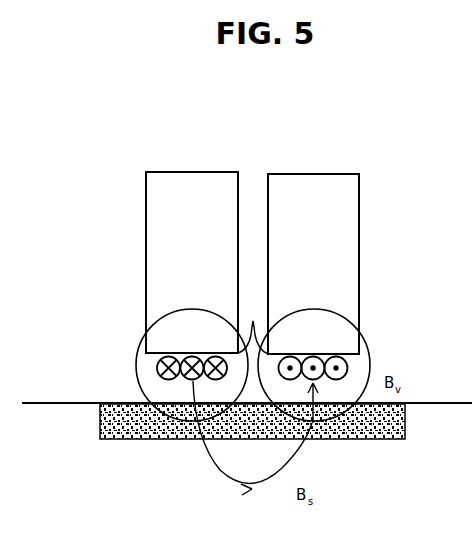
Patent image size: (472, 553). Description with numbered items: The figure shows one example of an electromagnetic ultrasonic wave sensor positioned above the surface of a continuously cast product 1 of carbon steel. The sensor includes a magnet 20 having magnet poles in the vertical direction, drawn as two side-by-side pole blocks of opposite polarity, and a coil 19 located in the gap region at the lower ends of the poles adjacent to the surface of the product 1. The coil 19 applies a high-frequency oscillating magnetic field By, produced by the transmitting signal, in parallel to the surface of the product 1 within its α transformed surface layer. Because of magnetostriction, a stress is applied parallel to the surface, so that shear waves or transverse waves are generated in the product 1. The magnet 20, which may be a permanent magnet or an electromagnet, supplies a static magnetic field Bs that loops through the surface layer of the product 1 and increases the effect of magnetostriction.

The magnet 20 is at (288, 174).
The coil 19 is at (253, 325).
The continuously cast product 1 is at (247, 421).